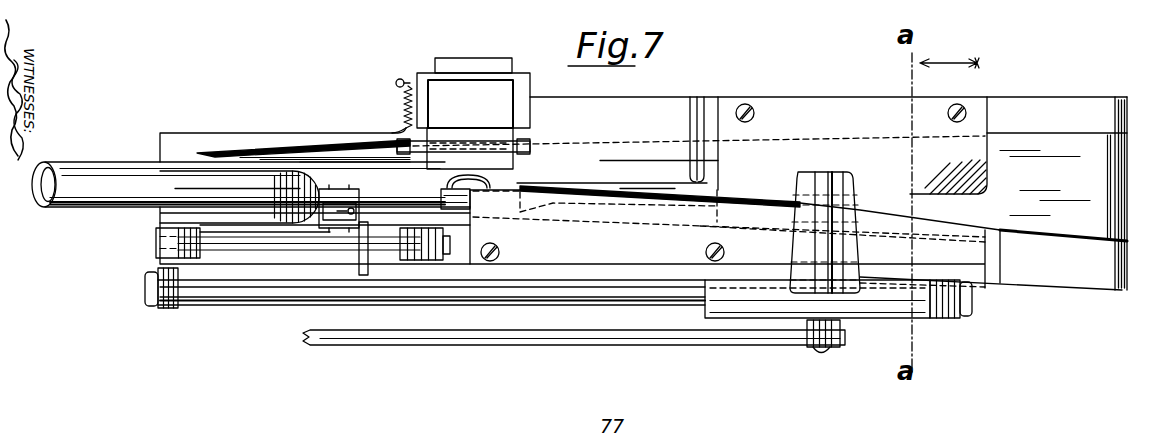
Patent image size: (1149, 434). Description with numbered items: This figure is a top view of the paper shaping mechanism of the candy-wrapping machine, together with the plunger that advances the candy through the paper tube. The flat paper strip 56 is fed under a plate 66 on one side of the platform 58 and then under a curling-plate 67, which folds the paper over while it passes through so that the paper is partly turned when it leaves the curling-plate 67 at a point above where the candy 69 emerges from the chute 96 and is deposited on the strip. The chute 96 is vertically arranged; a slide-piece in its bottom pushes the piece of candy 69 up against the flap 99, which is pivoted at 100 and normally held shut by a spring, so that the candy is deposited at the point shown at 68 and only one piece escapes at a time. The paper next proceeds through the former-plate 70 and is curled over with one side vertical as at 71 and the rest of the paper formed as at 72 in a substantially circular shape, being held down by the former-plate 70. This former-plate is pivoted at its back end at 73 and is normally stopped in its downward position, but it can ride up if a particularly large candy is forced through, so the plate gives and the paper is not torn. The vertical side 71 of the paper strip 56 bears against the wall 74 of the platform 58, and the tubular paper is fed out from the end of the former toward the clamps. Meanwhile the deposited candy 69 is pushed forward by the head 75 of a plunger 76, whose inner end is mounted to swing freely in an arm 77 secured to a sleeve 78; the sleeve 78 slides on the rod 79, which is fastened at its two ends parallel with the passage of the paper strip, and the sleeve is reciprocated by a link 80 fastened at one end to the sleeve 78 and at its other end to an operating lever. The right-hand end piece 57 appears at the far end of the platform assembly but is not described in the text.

The paper strip 56 is at (1057, 185).
The end plate 57 is at (1127, 97).
The platform 58 is at (1073, 277).
The plate 66 is at (770, 128).
The curling-plate 67 is at (987, 287).
The point of deposit 68 is at (461, 205).
The candy 69 is at (464, 183).
The former-plate 70 is at (186, 192).
The vertical side of paper 71 is at (132, 158).
The circular portion of paper 72 is at (110, 208).
The pivot of former-plate 73 is at (331, 187).
The wall of platform 74 is at (192, 148).
The head of plunger 75 is at (531, 187).
The plunger 76 is at (765, 183).
The arm 77 is at (845, 178).
The sleeve 78 is at (888, 310).
The rod 79 is at (601, 292).
The link 80 is at (752, 339).
The chute 96 is at (546, 58).
The flap 99 is at (518, 159).
The pivot of flap 100 is at (526, 145).